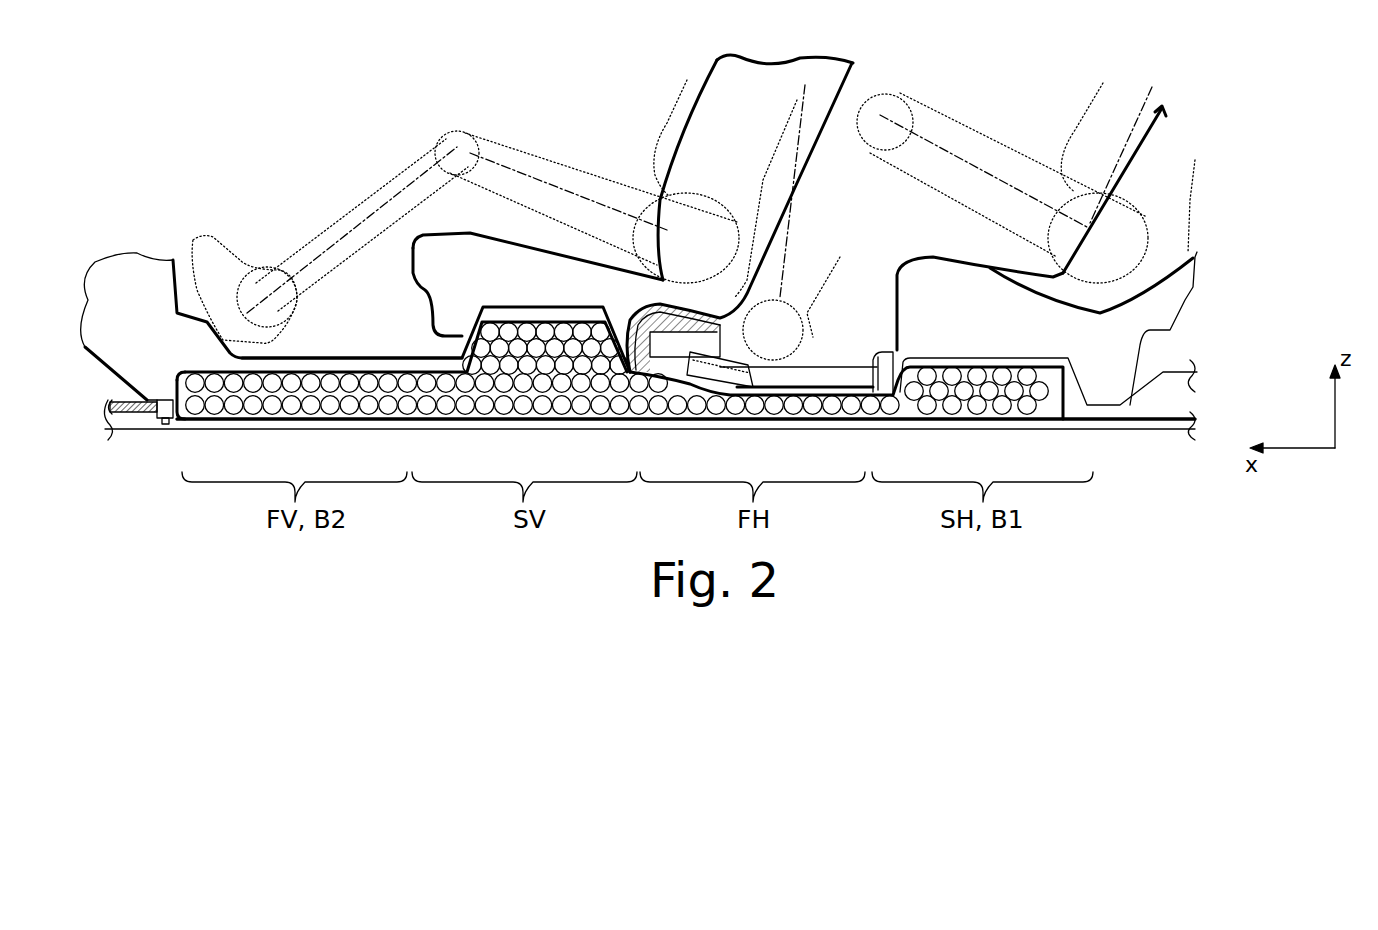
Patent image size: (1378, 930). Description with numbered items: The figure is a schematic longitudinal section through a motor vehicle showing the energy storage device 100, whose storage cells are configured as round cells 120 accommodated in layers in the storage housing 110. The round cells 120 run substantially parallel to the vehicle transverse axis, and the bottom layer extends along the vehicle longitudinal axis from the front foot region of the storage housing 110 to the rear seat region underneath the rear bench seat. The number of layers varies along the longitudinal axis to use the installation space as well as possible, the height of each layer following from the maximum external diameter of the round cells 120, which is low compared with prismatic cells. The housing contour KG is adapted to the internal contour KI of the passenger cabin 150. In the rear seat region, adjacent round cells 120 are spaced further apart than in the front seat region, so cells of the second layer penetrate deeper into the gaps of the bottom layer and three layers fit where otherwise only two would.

The energy storage device 100 is at (303, 138).
The storage housing 110 is at (927, 421).
The round cells 120 is at (297, 405).
The passenger cabin 150 is at (880, 357).
The housing contour KG is at (200, 372).
The internal contour KI is at (400, 358).